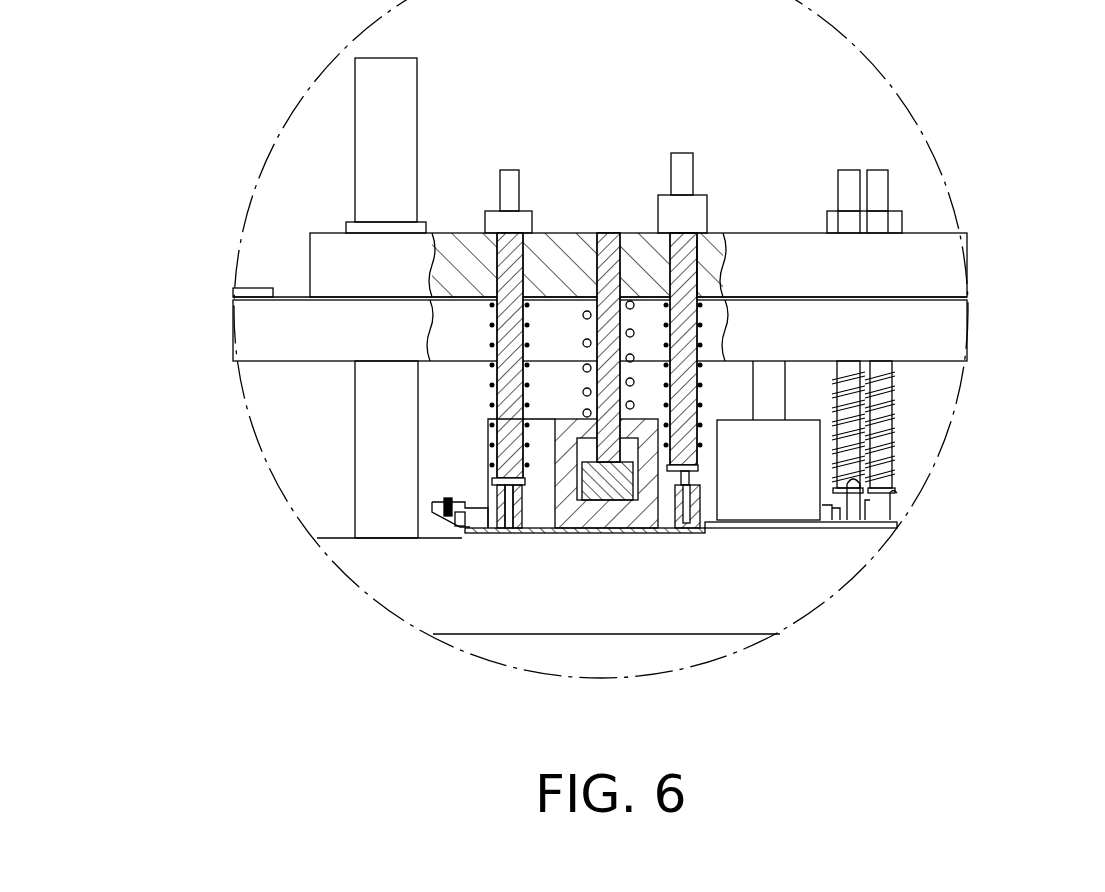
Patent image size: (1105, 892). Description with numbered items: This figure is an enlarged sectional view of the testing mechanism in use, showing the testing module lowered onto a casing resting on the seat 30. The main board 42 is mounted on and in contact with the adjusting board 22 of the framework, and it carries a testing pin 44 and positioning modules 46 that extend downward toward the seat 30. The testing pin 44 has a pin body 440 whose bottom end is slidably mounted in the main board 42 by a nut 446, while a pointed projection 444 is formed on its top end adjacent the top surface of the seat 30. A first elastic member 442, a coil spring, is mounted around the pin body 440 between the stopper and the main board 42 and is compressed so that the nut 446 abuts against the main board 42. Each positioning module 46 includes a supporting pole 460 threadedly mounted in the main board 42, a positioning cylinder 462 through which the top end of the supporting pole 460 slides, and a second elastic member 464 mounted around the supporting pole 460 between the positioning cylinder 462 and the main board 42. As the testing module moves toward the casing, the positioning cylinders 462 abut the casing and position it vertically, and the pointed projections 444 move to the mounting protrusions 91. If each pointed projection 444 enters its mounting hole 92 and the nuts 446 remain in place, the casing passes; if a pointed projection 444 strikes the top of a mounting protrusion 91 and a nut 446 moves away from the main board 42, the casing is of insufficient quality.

The adjusting board 22 is at (940, 330).
The seat 30 is at (828, 562).
The main board 42 is at (920, 267).
The testing pin 44 is at (696, 420).
The positioning module 46 is at (608, 435).
The mounting protrusion 91 is at (483, 530).
The mounting hole 92 is at (508, 487).
The pin body 440 is at (681, 245).
The first elastic member 442 is at (713, 290).
The pointed projection 444 is at (519, 487).
The nut 446 is at (700, 207).
The supporting pole 460 is at (605, 250).
The positioning cylinder 462 is at (650, 505).
The second elastic member 464 is at (583, 313).